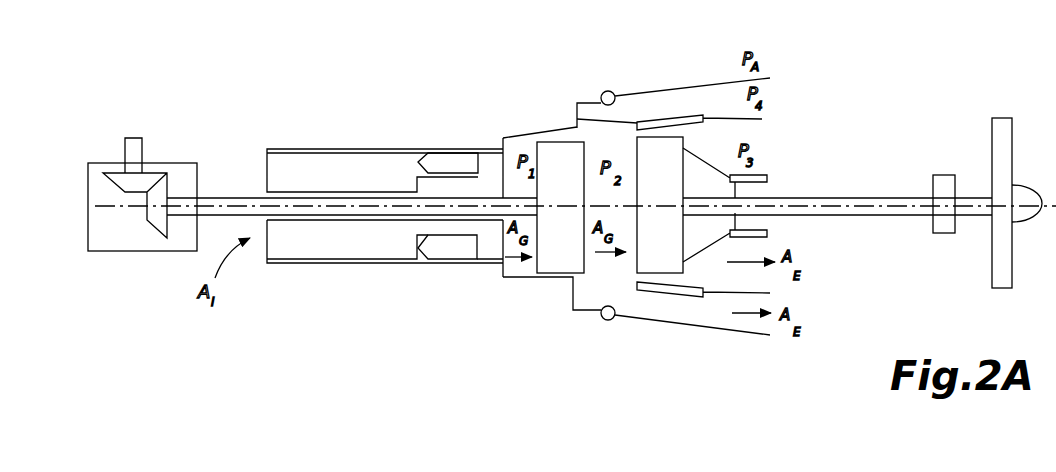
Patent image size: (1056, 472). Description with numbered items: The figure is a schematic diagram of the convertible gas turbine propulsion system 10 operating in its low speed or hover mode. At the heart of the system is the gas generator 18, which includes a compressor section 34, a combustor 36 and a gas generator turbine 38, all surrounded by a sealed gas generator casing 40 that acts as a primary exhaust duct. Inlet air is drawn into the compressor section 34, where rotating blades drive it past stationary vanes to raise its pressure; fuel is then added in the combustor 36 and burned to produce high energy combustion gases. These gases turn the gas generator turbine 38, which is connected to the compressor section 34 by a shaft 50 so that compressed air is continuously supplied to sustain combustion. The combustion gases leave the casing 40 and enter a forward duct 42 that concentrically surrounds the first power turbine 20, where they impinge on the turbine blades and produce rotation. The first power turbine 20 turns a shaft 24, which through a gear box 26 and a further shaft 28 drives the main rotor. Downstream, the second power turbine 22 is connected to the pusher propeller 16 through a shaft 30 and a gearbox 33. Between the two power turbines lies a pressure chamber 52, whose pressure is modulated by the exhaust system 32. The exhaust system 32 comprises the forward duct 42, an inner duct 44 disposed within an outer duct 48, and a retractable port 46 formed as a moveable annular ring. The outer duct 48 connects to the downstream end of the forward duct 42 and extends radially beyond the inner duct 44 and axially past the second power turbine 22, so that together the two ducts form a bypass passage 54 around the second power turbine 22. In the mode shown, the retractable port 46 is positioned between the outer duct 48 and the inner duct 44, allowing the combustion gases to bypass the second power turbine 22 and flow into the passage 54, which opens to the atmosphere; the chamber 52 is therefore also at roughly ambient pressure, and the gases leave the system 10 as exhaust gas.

The convertible gas turbine propulsion system 10 is at (448, 95).
The pusher propeller 16 is at (976, 138).
The gas generator 18 is at (325, 137).
The first power turbine 20 is at (550, 252).
The second power turbine 22 is at (636, 268).
The shaft 24 is at (247, 196).
The gear box 26 is at (130, 242).
The shaft 28 is at (128, 143).
The shaft 30 is at (887, 200).
The exhaust system 32 is at (690, 342).
The gearbox 33 is at (940, 187).
The compressor section 34 is at (278, 242).
The combustor 36 is at (450, 252).
The gas generator turbine 38 is at (490, 243).
The gas generator casing 40 is at (430, 150).
The forward duct 42 is at (507, 136).
The inner duct 44 is at (762, 119).
The retractable port 46 is at (578, 128).
The outer duct 48 is at (713, 86).
The shaft 50 is at (432, 226).
The pressure chamber 52 is at (612, 140).
The bypass passage 54 is at (668, 107).